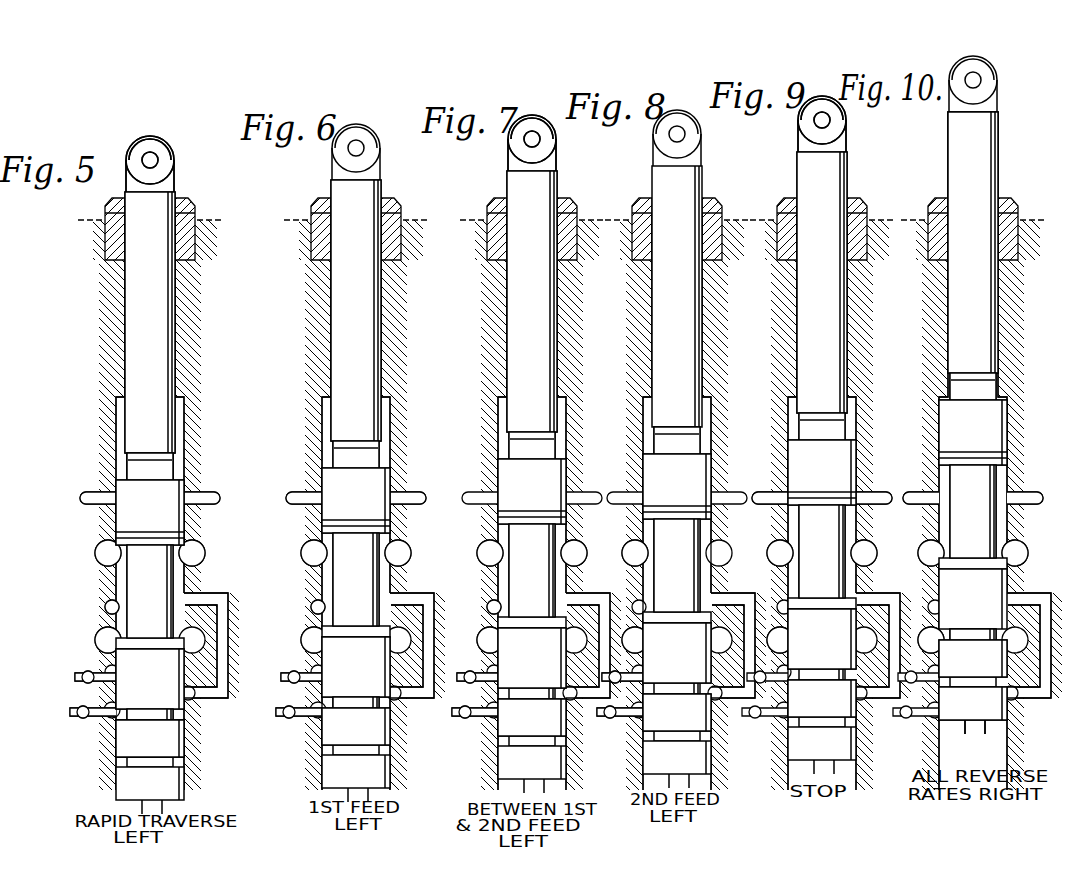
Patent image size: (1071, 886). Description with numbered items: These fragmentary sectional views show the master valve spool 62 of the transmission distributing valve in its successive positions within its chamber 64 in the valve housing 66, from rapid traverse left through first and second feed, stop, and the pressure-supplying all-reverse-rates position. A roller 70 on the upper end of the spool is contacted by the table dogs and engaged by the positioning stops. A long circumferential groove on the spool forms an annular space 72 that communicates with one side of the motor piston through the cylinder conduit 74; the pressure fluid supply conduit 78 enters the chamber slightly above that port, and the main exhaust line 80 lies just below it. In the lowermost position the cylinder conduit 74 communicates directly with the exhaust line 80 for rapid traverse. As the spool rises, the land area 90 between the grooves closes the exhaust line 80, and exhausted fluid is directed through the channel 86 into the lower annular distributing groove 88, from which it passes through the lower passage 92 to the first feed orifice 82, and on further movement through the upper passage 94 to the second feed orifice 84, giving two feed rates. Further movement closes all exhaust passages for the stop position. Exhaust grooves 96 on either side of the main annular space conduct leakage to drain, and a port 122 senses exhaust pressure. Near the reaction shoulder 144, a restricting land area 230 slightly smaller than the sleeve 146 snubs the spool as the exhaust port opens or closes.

In FIG. 5, the master valve spool 62 is at (158, 345).
In FIG. 6, the master valve spool 62 is at (340, 318).
In FIG. 7, the master valve spool 62 is at (550, 340).
In FIG. 9, the master valve spool 62 is at (810, 307).
In FIG. 10, the master valve spool 62 is at (965, 293).
In FIG. 5, the valve chamber 64 is at (182, 423).
In FIG. 6, the valve chamber 64 is at (387, 430).
In FIG. 7, the valve chamber 64 is at (567, 422).
In FIG. 8, the valve chamber 64 is at (712, 423).
In FIG. 9, the valve chamber 64 is at (860, 423).
In FIG. 10, the valve chamber 64 is at (946, 428).
In FIG. 5, the valve housing 66 is at (100, 240).
In FIG. 8, the valve housing 66 is at (625, 220).
In FIG. 10, the valve housing 66 is at (923, 218).
In FIG. 5, the roller 70 is at (178, 158).
In FIG. 7, the roller 70 is at (558, 128).
In FIG. 9, the roller 70 is at (850, 118).
In FIG. 5, the annular space 72 is at (182, 578).
In FIG. 6, the annular space 72 is at (392, 588).
In FIG. 7, the annular space 72 is at (570, 585).
In FIG. 9, the annular space 72 is at (860, 583).
In FIG. 10, the annular space 72 is at (946, 520).
In FIG. 5, the cylinder conduit 74 is at (110, 537).
In FIG. 6, the cylinder conduit 74 is at (312, 542).
In FIG. 7, the cylinder conduit 74 is at (490, 545).
In FIG. 8, the cylinder conduit 74 is at (640, 542).
In FIG. 9, the cylinder conduit 74 is at (782, 540).
In FIG. 10, the cylinder conduit 74 is at (940, 595).
In FIG. 5, the pressure fluid supply conduit 78 is at (86, 497).
In FIG. 6, the pressure fluid supply conduit 78 is at (302, 494).
In FIG. 9, the pressure fluid supply conduit 78 is at (790, 493).
In FIG. 10, the pressure fluid supply conduit 78 is at (930, 492).
In FIG. 5, the main exhaust line 80 is at (110, 613).
In FIG. 6, the main exhaust line 80 is at (312, 633).
In FIG. 7, the main exhaust line 80 is at (490, 635).
In FIG. 8, the main exhaust line 80 is at (638, 635).
In FIG. 9, the main exhaust line 80 is at (788, 622).
In FIG. 10, the main exhaust line 80 is at (935, 625).
In FIG. 5, the first feed metering orifice 82 is at (84, 718).
In FIG. 6, the first feed metering orifice 82 is at (290, 716).
In FIG. 7, the first feed metering orifice 82 is at (470, 718).
In FIG. 8, the first feed metering orifice 82 is at (617, 718).
In FIG. 5, the second feed metering orifice 84 is at (88, 672).
In FIG. 6, the second feed metering orifice 84 is at (292, 670).
In FIG. 7, the second feed metering orifice 84 is at (498, 677).
In FIG. 8, the second feed metering orifice 84 is at (645, 677).
In FIG. 5, the channel 86 is at (228, 667).
In FIG. 6, the channel 86 is at (425, 700).
In FIG. 7, the channel 86 is at (595, 702).
In FIG. 8, the channel 86 is at (742, 702).
In FIG. 9, the channel 86 is at (885, 702).
In FIG. 10, the channel 86 is at (1040, 702).
In FIG. 5, the lower annular distributing groove 88 is at (185, 720).
In FIG. 5, the land area 90 is at (185, 700).
In FIG. 6, the land area 90 is at (380, 652).
In FIG. 10, the land area 90 is at (938, 665).
In FIG. 5, the lower passage 92 is at (115, 707).
In FIG. 6, the lower passage 92 is at (322, 730).
In FIG. 7, the lower passage 92 is at (498, 705).
In FIG. 8, the lower passage 92 is at (645, 705).
In FIG. 9, the lower passage 92 is at (790, 695).
In FIG. 10, the lower passage 92 is at (940, 700).
In FIG. 5, the upper passage 94 is at (117, 683).
In FIG. 6, the upper passage 94 is at (324, 682).
In FIG. 7, the upper passage 94 is at (500, 672).
In FIG. 8, the upper passage 94 is at (645, 672).
In FIG. 9, the upper passage 94 is at (795, 665).
In FIG. 10, the upper passage 94 is at (942, 672).
In FIG. 5, the exhaust grooves 96 is at (176, 520).
In FIG. 6, the exhaust grooves 96 is at (350, 525).
In FIG. 7, the exhaust grooves 96 is at (527, 512).
In FIG. 8, the exhaust grooves 96 is at (668, 502).
In FIG. 9, the exhaust grooves 96 is at (815, 492).
In FIG. 10, the exhaust grooves 96 is at (965, 440).
In FIG. 5, the port 122 is at (107, 593).
In FIG. 6, the port 122 is at (312, 600).
In FIG. 7, the port 122 is at (492, 598).
In FIG. 5, the reaction shoulder 144 is at (115, 473).
In FIG. 10, the sleeve 146 is at (943, 338).
In FIG. 5, the restricting land area 230 is at (128, 462).
In FIG. 6, the restricting land area 230 is at (340, 448).
In FIG. 7, the restricting land area 230 is at (512, 440).
In FIG. 8, the restricting land area 230 is at (707, 433).
In FIG. 9, the restricting land area 230 is at (857, 420).
In FIG. 10, the restricting land area 230 is at (943, 383).